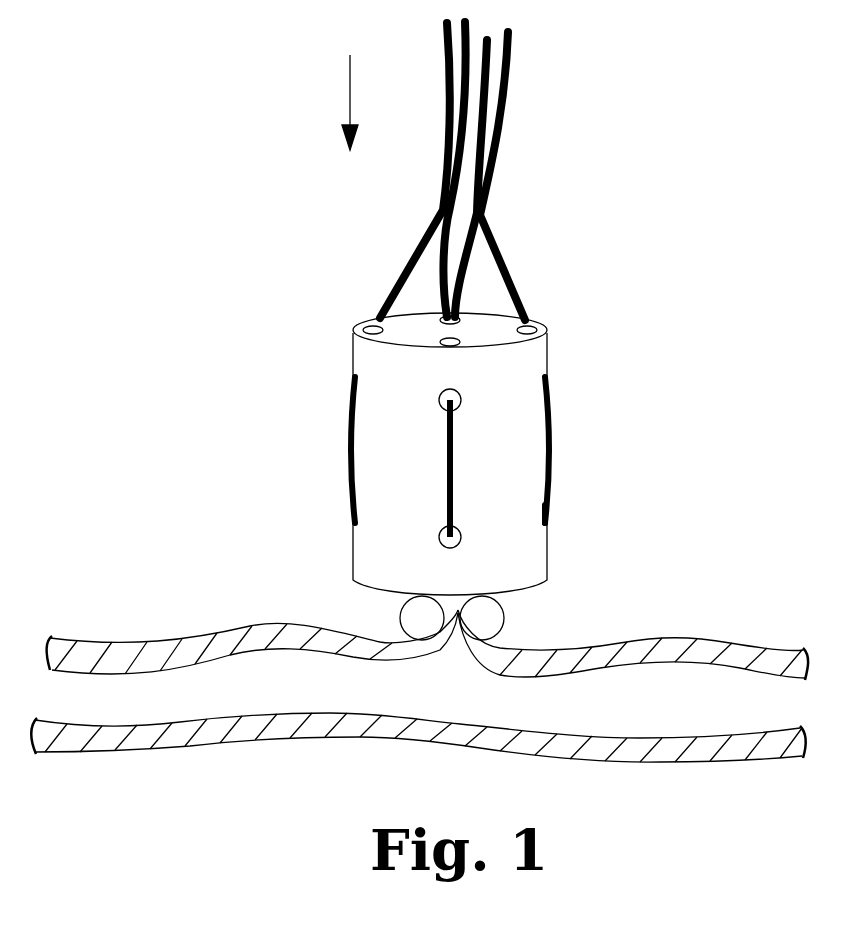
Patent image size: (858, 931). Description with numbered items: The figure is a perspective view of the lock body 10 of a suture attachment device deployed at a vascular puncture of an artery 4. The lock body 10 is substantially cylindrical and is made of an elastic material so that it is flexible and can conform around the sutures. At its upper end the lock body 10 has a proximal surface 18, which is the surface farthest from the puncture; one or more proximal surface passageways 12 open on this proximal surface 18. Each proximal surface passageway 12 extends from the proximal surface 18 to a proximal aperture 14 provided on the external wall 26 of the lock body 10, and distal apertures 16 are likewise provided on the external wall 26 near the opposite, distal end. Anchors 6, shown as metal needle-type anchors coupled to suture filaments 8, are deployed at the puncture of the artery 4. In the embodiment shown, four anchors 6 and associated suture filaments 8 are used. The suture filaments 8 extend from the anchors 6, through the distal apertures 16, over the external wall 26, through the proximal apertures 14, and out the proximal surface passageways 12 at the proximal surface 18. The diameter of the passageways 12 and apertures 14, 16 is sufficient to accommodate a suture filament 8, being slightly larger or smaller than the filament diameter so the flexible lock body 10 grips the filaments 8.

The artery 4 is at (758, 658).
The anchor 6 is at (506, 620).
The suture filament 8 is at (512, 75).
The lock body 10 is at (318, 442).
The proximal surface passageway 12 is at (547, 330).
The proximal aperture 14 is at (548, 376).
The distal aperture 16 is at (549, 528).
The proximal surface 18 is at (362, 328).
The external wall 26 is at (352, 558).